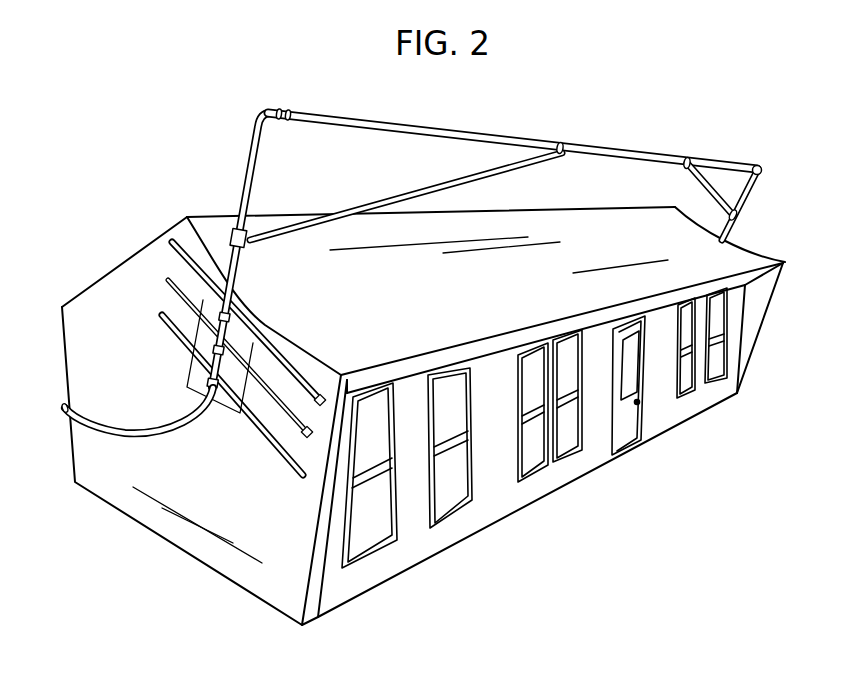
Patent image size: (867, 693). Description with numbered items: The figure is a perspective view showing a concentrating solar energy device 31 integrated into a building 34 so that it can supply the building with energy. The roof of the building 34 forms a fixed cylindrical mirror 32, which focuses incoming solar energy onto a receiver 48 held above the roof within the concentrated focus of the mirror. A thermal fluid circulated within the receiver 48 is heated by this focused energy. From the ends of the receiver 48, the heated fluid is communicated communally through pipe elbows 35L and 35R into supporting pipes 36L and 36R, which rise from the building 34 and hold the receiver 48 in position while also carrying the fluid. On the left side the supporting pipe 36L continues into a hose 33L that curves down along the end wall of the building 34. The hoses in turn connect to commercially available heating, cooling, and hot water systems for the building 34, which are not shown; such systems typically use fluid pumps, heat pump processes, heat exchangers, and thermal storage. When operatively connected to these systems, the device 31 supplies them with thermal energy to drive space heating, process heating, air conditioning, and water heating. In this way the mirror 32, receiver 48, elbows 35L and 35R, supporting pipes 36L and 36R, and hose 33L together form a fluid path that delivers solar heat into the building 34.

The concentrating solar energy device 31 is at (435, 253).
The cylindrical mirror 32 is at (402, 310).
The hose 33L is at (132, 432).
The building 34 is at (663, 478).
The pipe elbow 35L is at (258, 115).
The pipe elbow 35R is at (760, 167).
The supporting pipe 36L is at (243, 203).
The supporting pipe 36R is at (745, 202).
The receiver 48 is at (620, 128).